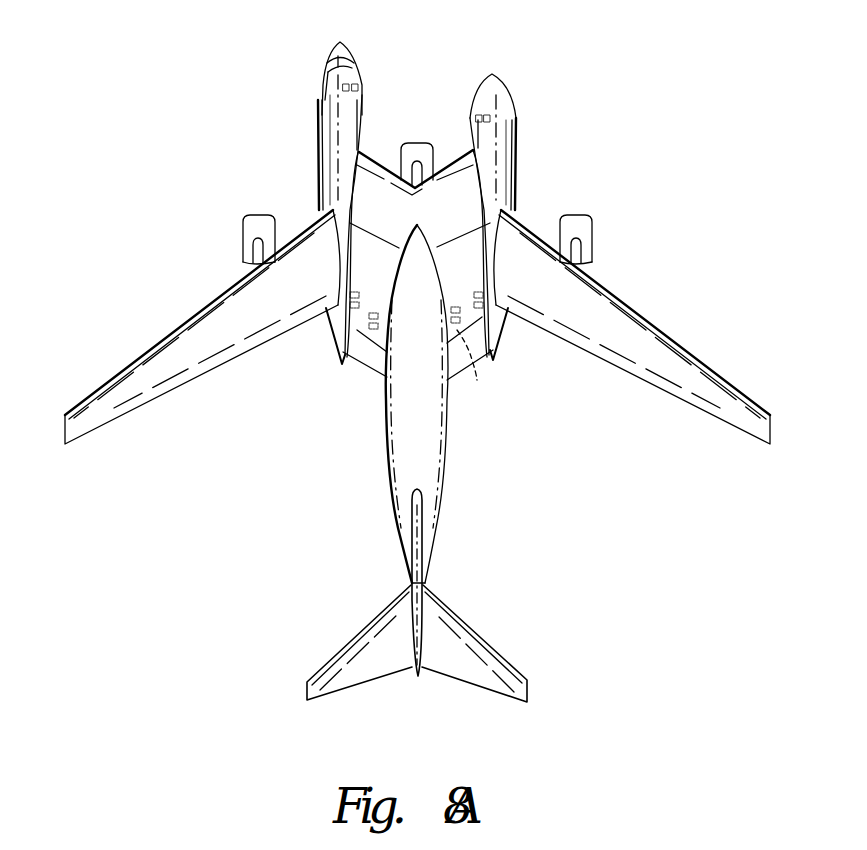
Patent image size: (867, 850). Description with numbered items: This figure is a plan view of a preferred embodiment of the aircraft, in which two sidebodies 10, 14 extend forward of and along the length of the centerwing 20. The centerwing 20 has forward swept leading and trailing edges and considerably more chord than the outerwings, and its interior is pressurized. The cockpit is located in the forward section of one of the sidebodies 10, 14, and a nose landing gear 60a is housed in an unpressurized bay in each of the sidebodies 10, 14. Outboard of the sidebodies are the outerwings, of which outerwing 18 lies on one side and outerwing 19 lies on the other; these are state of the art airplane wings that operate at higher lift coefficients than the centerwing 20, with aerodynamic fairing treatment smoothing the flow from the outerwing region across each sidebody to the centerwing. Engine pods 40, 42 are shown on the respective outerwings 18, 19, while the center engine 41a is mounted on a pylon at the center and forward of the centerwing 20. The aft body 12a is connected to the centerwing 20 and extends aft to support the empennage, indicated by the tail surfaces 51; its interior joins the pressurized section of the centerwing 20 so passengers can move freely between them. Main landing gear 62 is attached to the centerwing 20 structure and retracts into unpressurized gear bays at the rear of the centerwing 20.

The sidebody 10 is at (332, 97).
The sidebody 14 is at (514, 102).
The nose landing gear 60a is at (354, 76).
The centerwing 20 is at (458, 212).
The center engine 41a is at (418, 150).
The left engine pod 40 is at (242, 228).
The right engine pod 42 is at (590, 230).
The outerwing 18 is at (200, 330).
The right wing 19 is at (636, 330).
The aft body 12a is at (435, 470).
The main landing gear 62 is at (474, 370).
The tail assembly 51 is at (445, 637).